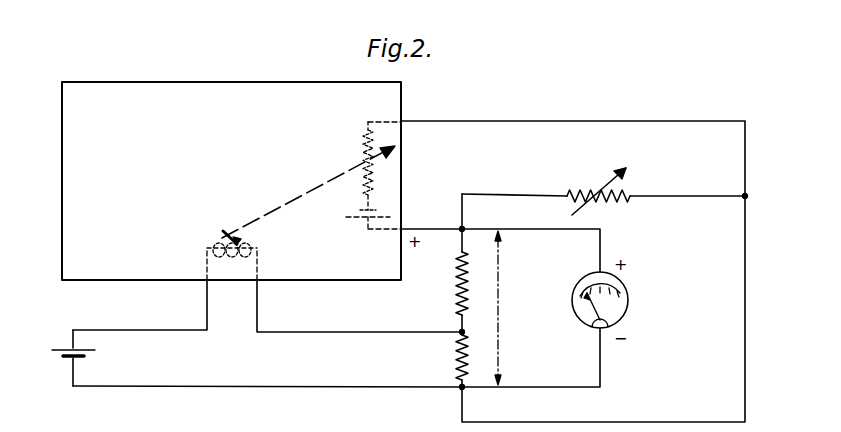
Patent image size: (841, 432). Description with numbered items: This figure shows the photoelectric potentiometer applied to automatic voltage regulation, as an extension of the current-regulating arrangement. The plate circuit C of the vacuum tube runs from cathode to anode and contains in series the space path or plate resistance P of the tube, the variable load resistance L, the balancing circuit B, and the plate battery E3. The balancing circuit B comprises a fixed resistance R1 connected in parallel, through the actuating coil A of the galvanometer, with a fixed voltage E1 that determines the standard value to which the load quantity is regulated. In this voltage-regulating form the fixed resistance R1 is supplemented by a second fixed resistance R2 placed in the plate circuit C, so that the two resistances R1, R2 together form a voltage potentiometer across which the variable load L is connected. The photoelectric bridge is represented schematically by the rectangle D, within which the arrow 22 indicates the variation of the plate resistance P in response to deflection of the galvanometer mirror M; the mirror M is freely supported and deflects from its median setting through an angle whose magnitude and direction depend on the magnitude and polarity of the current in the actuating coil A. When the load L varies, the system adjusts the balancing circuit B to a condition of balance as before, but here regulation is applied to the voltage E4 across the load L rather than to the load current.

The rectangle D is at (163, 98).
The circuit C is at (503, 128).
The load resistance L is at (580, 190).
The fixed resistance R2 is at (456, 287).
The fixed resistance R1 is at (456, 355).
The voltage across load E4 is at (500, 308).
The actuating coil A is at (231, 268).
The movable element or mirror M is at (222, 229).
The arrow 22 is at (275, 225).
The space path resistance P is at (360, 150).
The plate battery E3 is at (354, 212).
The fixed voltage E1 is at (82, 357).
The balancing circuit B is at (260, 374).